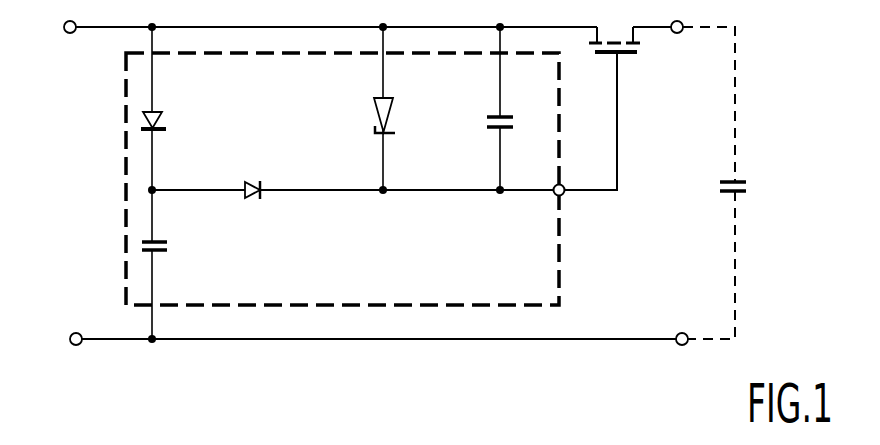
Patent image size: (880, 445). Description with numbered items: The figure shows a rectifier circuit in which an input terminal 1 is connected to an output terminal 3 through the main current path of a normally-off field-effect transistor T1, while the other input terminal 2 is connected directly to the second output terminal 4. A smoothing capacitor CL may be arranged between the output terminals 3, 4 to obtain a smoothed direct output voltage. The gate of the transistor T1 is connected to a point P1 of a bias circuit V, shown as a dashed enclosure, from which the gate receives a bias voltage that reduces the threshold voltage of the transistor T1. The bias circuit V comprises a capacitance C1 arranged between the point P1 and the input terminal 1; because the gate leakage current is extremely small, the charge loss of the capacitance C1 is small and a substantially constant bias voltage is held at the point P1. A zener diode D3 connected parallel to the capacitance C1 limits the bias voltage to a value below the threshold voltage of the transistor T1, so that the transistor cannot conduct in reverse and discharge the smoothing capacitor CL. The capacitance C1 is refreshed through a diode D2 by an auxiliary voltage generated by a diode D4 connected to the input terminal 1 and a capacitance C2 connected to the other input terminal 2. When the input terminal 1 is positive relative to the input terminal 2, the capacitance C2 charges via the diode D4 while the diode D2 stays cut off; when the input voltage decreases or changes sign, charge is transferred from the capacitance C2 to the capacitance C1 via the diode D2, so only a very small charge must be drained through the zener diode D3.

The input terminal 1 is at (77, 37).
The other input terminal 2 is at (80, 320).
The output terminal 3 is at (683, 36).
The second output terminal 4 is at (688, 317).
The bias circuit V is at (569, 288).
The smoothing capacitor CL is at (747, 188).
The normally-off field-effect transistor T1 is at (637, 49).
The diode D4 is at (162, 124).
The zener diode D3 is at (374, 106).
The diode D2 is at (252, 173).
The capacitance C1 is at (487, 122).
The capacitance C2 is at (167, 249).
The point P1 is at (566, 200).